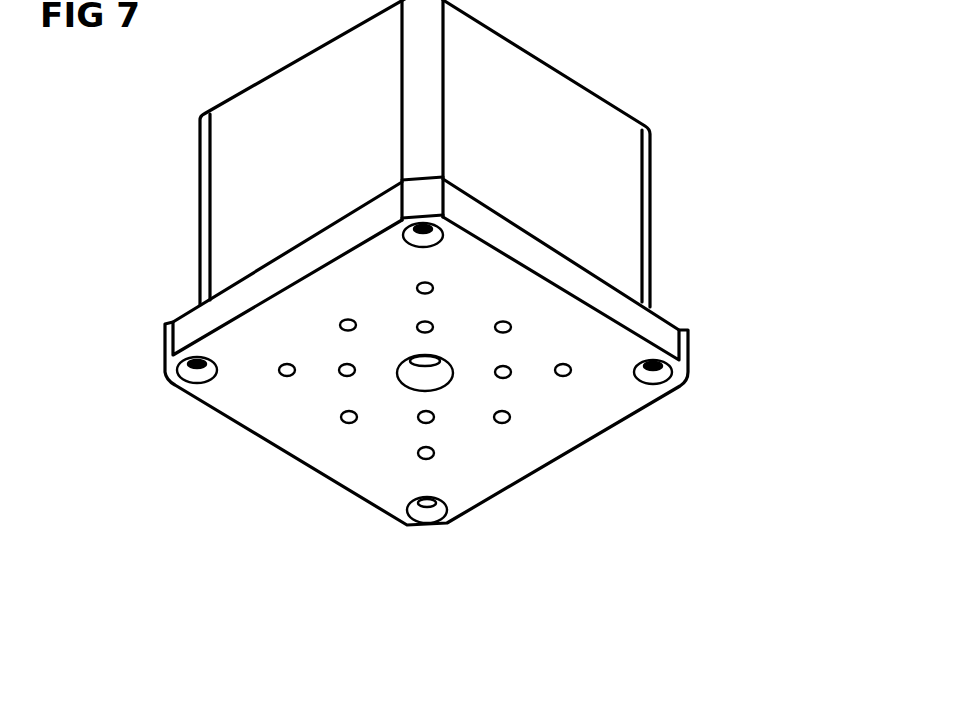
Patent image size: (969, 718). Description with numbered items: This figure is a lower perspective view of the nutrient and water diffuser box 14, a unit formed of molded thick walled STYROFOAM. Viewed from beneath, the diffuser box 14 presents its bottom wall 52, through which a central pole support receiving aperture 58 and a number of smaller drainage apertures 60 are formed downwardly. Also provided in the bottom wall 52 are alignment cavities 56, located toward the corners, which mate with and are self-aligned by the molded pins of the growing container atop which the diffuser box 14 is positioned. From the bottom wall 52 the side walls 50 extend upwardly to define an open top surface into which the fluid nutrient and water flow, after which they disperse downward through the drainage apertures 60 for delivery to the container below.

The nutrient and water diffuser box 14 is at (438, 314).
The side walls 50 is at (653, 180).
The bottom wall 52 is at (438, 402).
The alignment cavities 56 is at (643, 385).
The central pole support receiving aperture 58 is at (447, 387).
The drainage apertures 60 is at (510, 422).